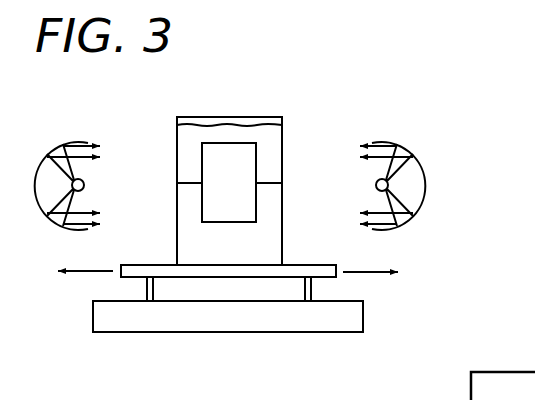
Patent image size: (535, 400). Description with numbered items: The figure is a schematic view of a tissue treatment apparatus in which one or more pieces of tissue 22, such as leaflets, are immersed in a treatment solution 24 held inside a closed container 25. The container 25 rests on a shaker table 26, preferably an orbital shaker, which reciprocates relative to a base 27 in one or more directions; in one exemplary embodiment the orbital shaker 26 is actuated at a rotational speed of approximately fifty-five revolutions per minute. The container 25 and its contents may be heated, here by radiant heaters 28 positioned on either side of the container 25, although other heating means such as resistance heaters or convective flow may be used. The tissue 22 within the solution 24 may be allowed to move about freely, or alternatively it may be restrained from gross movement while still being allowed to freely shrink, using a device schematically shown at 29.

The tissue 22 is at (220, 143).
The treatment solution 24 is at (265, 124).
The closed container 25 is at (176, 140).
The shaker table 26 is at (327, 278).
The base 27 is at (363, 318).
The radiant heaters 28 is at (412, 160).
The restraining device 29 is at (178, 201).